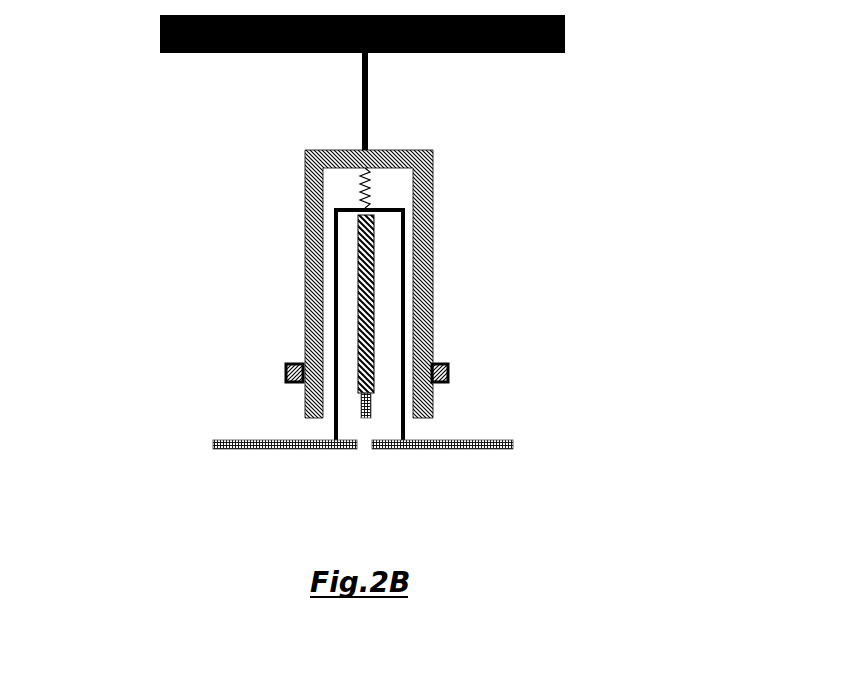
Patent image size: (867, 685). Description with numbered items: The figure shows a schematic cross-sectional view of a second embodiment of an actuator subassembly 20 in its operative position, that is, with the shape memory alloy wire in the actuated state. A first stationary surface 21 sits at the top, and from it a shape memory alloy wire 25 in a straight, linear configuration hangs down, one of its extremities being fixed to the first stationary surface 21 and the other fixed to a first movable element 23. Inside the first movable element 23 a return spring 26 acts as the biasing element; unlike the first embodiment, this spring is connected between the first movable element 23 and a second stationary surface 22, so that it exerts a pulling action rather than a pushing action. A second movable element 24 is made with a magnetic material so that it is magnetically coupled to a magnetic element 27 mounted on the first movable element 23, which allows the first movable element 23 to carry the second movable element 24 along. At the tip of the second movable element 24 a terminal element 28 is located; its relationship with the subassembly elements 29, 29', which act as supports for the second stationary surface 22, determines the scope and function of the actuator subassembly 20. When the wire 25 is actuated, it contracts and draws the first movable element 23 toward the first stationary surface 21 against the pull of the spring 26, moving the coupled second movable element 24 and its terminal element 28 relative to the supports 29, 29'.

The actuator subassembly 20 is at (526, 180).
The first stationary surface 21 is at (185, 53).
The second stationary surface 22 is at (402, 432).
The first movable element 23 is at (305, 173).
The second movable element 24 is at (367, 323).
The shape memory alloy wire 25 is at (362, 100).
The return spring 26 is at (367, 183).
The magnetic element 27 is at (285, 371).
The terminal element 28 is at (367, 423).
The subassembly element 29 is at (247, 449).
The subassembly element 29' is at (505, 467).